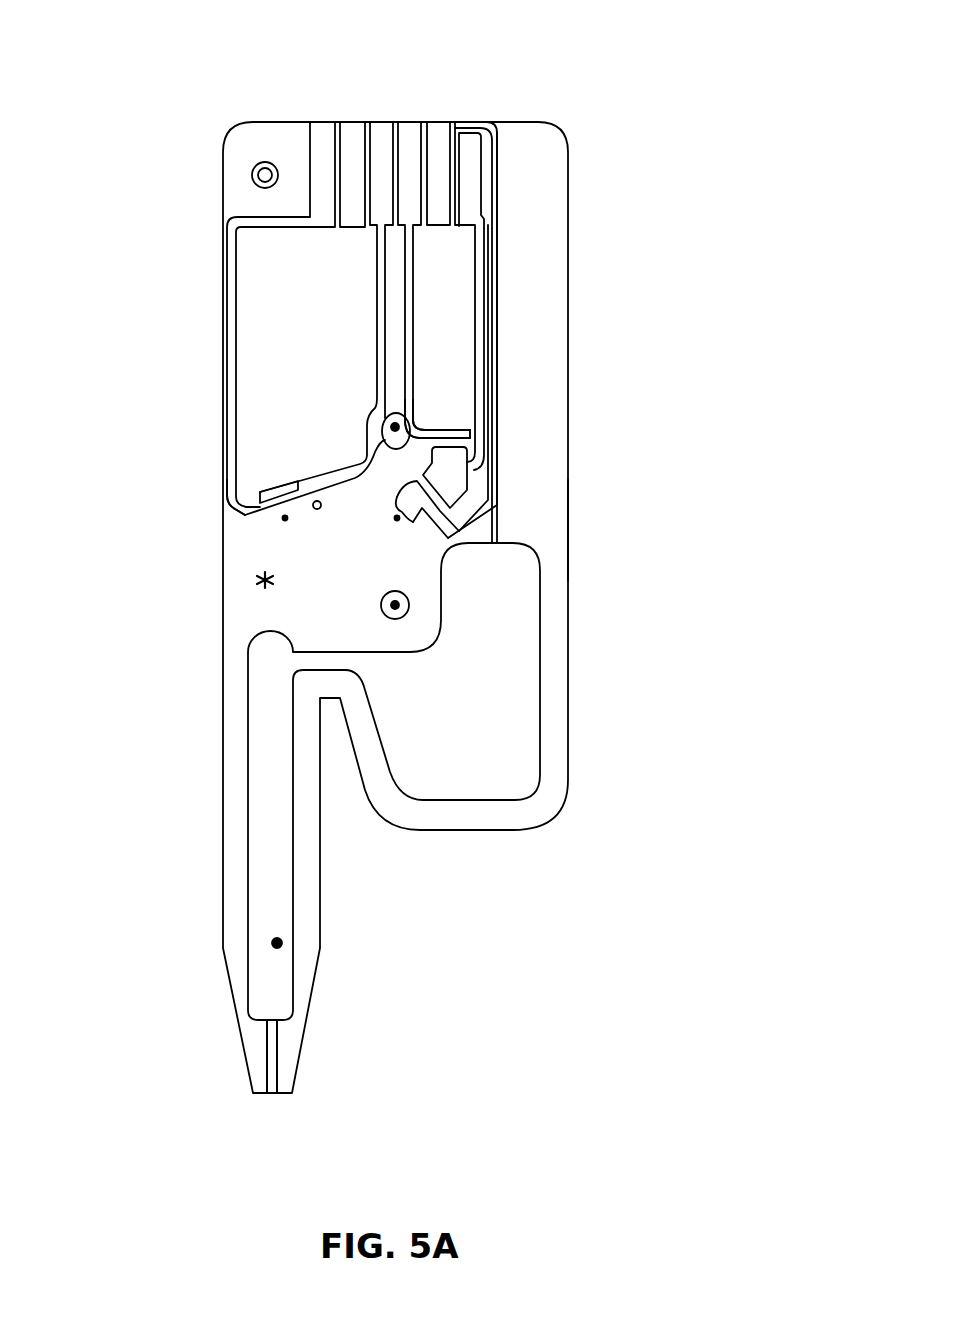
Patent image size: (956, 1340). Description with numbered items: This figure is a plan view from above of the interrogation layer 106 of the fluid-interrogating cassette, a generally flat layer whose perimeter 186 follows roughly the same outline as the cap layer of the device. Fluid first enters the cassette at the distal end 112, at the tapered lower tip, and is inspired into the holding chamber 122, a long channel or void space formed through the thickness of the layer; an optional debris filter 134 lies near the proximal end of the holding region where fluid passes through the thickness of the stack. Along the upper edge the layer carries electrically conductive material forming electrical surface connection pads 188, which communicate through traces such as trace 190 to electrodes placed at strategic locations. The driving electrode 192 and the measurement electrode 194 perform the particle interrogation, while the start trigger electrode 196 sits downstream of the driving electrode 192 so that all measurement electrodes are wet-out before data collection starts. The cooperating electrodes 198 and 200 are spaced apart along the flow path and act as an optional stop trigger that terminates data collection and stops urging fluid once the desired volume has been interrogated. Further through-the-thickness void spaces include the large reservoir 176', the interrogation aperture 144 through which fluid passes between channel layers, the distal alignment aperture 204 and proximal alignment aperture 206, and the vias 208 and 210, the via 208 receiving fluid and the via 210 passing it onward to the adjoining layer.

The interrogation layer 106 is at (560, 432).
The distal end 112 is at (232, 1085).
The holding chamber 122 is at (279, 941).
The debris filter 134 is at (248, 585).
The interrogation aperture 144 is at (400, 527).
The reservoir 176' is at (445, 781).
The perimeter 186 is at (571, 530).
The electrical surface connection pads 188 is at (404, 100).
The trace 190 is at (232, 333).
The driving electrode 192 is at (455, 471).
The measurement electrode 194 is at (430, 507).
The start trigger electrode 196 is at (452, 432).
The stop trigger electrode 198 is at (280, 490).
The stop trigger electrode 200 is at (258, 507).
The distal alignment aperture 204 is at (381, 606).
The proximal alignment aperture 206 is at (392, 412).
The via 208 is at (284, 524).
The via 210 is at (321, 508).